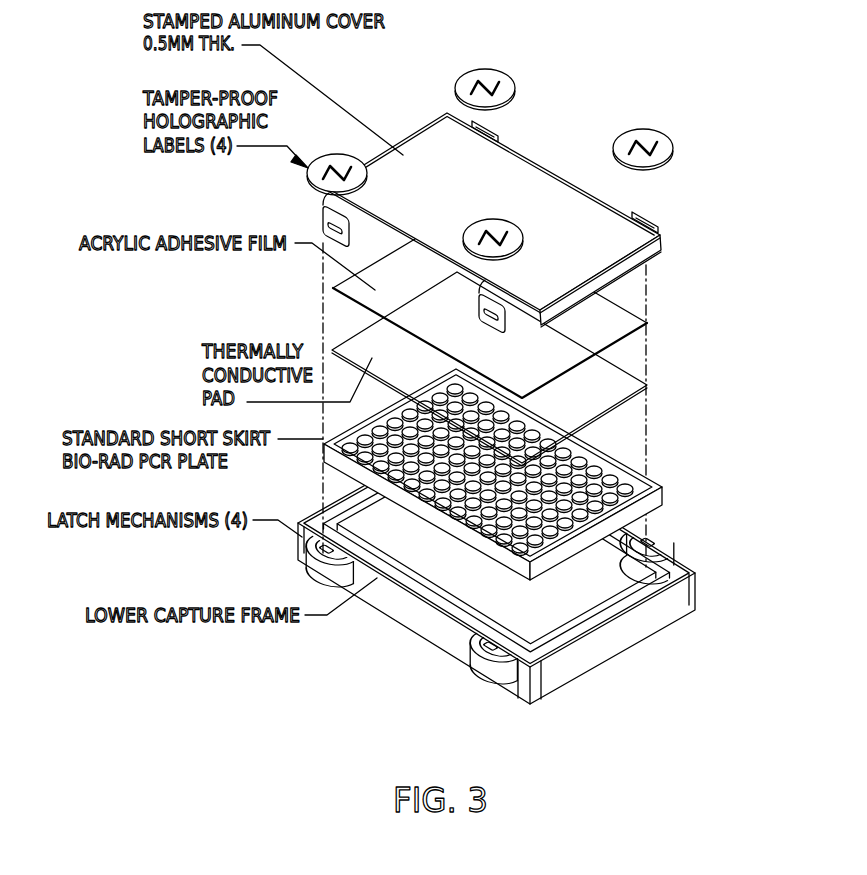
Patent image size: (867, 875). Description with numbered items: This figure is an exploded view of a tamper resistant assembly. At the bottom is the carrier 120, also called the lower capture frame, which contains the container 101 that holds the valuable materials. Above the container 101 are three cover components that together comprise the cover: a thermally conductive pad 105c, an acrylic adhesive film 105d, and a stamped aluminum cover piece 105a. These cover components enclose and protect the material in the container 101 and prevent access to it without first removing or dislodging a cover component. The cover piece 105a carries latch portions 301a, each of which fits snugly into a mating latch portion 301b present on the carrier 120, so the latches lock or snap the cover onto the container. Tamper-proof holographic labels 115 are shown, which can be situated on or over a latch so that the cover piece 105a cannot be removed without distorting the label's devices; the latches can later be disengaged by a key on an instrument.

The tamper-proof holographic label 115 is at (683, 120).
The latch portion 301a is at (323, 217).
The cover piece 105a is at (662, 250).
The adhesive film 105d is at (647, 323).
The thermally conductive pad 105c is at (647, 385).
The container 101 is at (663, 490).
The latch portion 301b is at (310, 559).
The carrier 120 is at (633, 645).